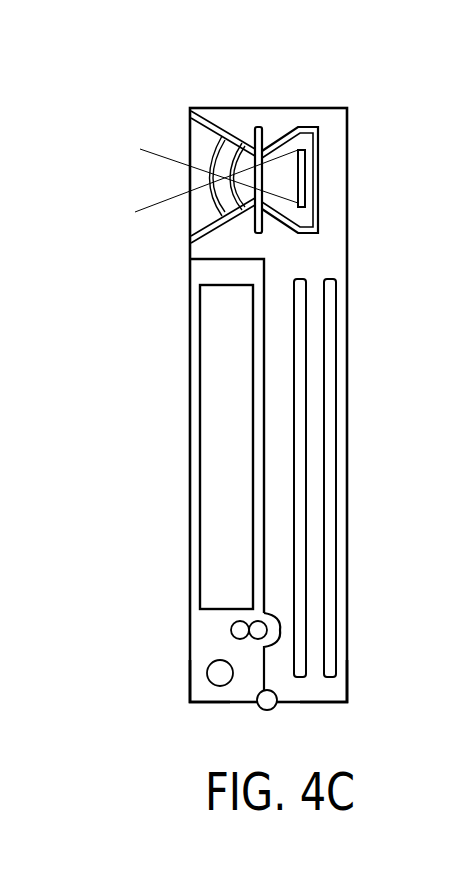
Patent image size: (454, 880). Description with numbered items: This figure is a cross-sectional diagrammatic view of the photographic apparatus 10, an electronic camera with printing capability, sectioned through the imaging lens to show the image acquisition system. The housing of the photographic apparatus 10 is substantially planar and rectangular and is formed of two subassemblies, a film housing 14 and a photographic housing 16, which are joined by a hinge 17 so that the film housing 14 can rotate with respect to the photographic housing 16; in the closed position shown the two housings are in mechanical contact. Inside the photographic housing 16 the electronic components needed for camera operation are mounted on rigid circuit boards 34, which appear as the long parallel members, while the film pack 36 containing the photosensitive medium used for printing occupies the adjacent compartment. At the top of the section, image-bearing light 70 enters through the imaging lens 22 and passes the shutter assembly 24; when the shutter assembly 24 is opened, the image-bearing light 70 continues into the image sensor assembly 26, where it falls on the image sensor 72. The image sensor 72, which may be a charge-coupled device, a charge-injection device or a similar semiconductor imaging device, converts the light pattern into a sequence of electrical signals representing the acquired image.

The photographic apparatus 10 is at (316, 58).
The film housing 14 is at (200, 690).
The photographic housing 16 is at (340, 690).
The hinge 17 is at (268, 710).
The imaging lens 22 is at (198, 211).
The shutter assembly 24 is at (258, 127).
The image sensor assembly 26 is at (309, 127).
The rigid circuit boards 34 is at (303, 659).
The film pack 36 is at (215, 543).
The image-bearing light 70 is at (164, 144).
The image sensor 72 is at (305, 179).